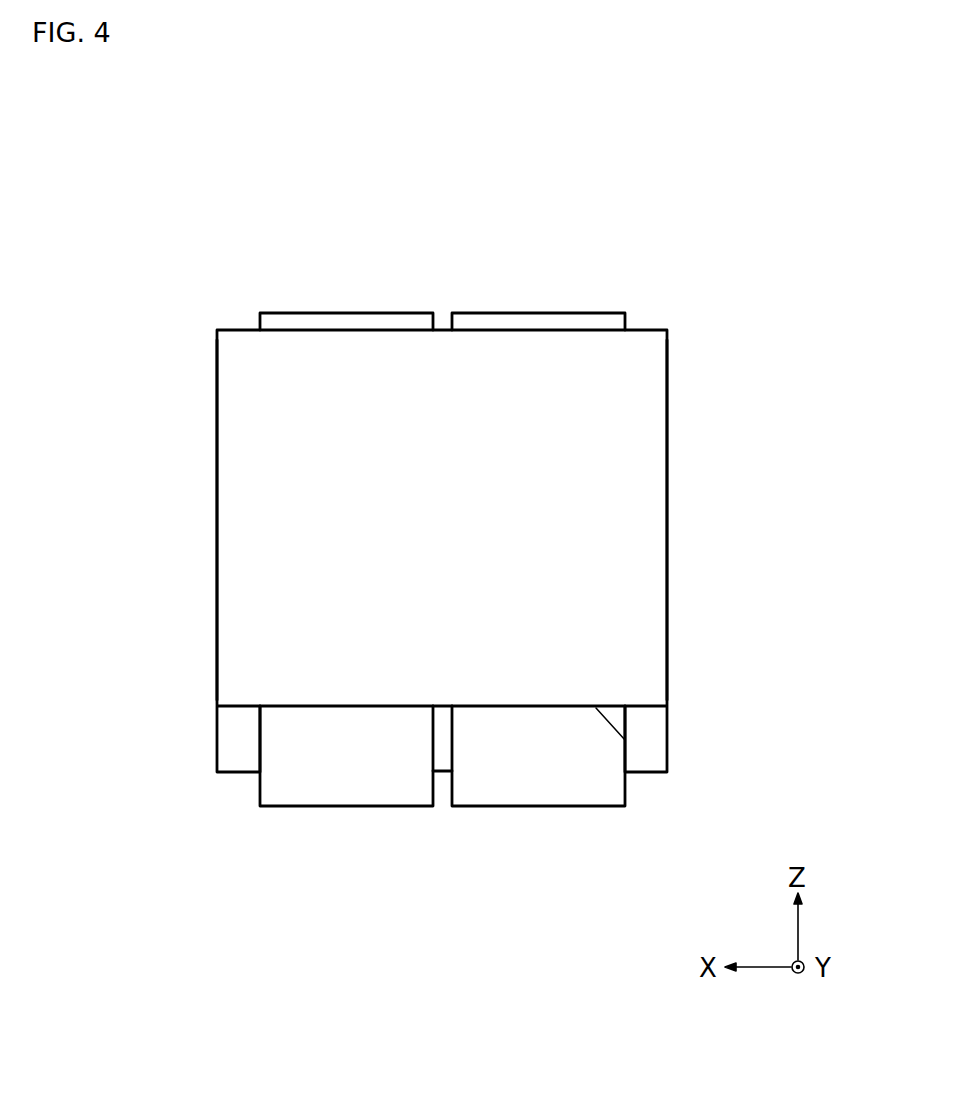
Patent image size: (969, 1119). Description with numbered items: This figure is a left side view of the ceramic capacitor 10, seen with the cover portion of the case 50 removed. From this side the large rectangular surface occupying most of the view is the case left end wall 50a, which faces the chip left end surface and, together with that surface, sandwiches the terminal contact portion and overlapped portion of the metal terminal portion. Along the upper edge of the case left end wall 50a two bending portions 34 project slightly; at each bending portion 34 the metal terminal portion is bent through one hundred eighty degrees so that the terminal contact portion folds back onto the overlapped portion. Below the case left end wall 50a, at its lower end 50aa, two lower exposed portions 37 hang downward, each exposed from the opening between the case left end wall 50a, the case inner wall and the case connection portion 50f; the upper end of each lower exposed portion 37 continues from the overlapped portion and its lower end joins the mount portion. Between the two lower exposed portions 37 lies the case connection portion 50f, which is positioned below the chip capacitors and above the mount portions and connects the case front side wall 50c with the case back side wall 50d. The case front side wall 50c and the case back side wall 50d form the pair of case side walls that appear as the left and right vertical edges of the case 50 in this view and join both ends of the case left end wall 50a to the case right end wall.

The ceramic capacitor 10 is at (252, 268).
The bending portion 34 is at (348, 312).
The lower exposed portion 37 is at (338, 766).
The case 50 is at (672, 316).
The case left end wall 50a is at (465, 526).
The lower end of the case left end wall 50aa is at (625, 740).
The case front side wall 50c is at (667, 492).
The case back side wall 50d is at (217, 478).
The case connection portion 50f is at (442, 776).